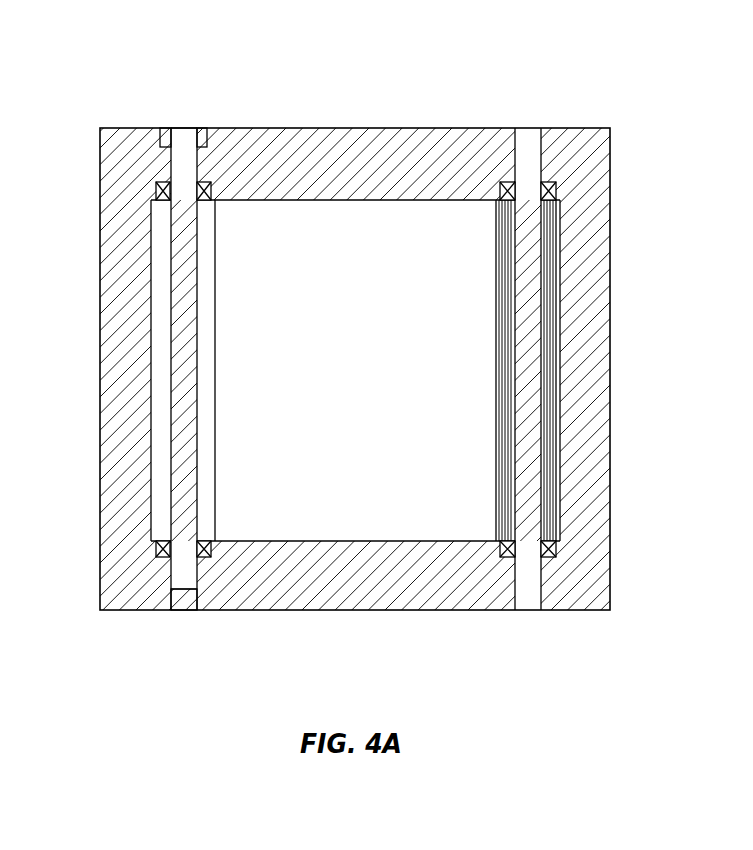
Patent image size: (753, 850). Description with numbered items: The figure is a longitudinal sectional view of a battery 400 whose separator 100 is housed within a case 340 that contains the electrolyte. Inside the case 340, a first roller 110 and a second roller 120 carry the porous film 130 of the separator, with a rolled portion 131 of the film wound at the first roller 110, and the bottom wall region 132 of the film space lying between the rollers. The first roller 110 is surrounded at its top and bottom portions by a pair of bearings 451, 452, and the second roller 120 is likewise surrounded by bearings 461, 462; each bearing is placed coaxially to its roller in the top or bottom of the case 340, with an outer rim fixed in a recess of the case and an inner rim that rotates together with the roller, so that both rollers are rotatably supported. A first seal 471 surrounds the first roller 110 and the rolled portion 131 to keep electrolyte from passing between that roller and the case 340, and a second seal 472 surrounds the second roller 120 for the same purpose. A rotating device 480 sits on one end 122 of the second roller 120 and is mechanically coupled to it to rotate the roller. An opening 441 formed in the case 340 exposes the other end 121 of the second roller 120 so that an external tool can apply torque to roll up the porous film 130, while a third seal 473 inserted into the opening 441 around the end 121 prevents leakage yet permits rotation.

The battery 400 is at (72, 60).
The separator 100 is at (349, 199).
The first roller 110 is at (525, 140).
The second roller 120 is at (184, 323).
The end of second roller 121 is at (183, 128).
The end of second roller 122 is at (174, 592).
The porous film 130 is at (380, 364).
The rolled portion 131 is at (548, 270).
The cavity bottom wall 132 is at (392, 515).
The case 340 is at (576, 580).
The opening 441 is at (190, 128).
The bearing 451 is at (557, 190).
The bearing 452 is at (556, 545).
The bearing 461 is at (157, 192).
The bearing 462 is at (157, 552).
The first seal 471 is at (557, 328).
The second seal 472 is at (158, 423).
The third seal 473 is at (163, 136).
The rotating device 480 is at (185, 600).